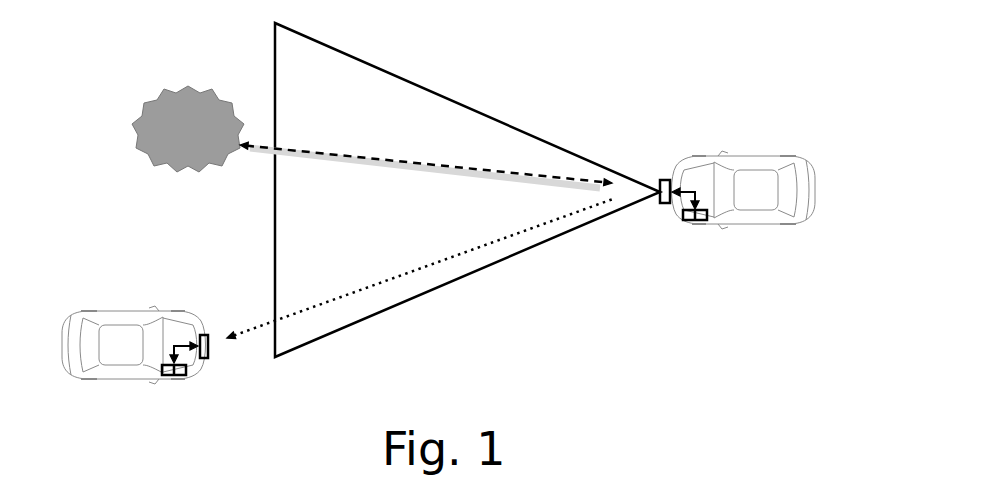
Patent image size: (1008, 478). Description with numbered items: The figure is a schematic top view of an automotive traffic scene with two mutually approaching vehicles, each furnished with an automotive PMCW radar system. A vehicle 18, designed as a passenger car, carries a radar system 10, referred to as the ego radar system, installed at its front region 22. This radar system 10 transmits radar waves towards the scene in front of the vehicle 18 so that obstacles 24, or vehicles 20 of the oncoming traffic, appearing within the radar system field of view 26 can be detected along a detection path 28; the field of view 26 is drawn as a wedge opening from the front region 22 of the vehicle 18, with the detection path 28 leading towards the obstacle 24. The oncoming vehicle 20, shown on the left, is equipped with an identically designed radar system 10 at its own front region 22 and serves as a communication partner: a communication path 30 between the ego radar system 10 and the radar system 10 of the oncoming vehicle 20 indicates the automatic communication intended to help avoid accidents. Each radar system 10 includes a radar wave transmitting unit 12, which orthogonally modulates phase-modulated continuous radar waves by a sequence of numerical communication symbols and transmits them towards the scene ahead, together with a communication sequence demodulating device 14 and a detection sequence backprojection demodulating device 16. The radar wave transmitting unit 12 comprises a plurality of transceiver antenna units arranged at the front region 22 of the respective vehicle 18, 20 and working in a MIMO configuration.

The radar system 10 is at (700, 178).
The radar wave transmitting unit 12 is at (665, 176).
The communication sequence demodulating device 14 is at (703, 222).
The detection sequence backprojection demodulating device 16 is at (685, 222).
The vehicle 18 is at (735, 140).
The oncoming vehicle 20 is at (137, 393).
The front region 22 is at (655, 217).
The obstacle 24 is at (147, 115).
The radar system field of view 26 is at (540, 139).
The detection path 28 is at (318, 148).
The communication path 30 is at (330, 305).